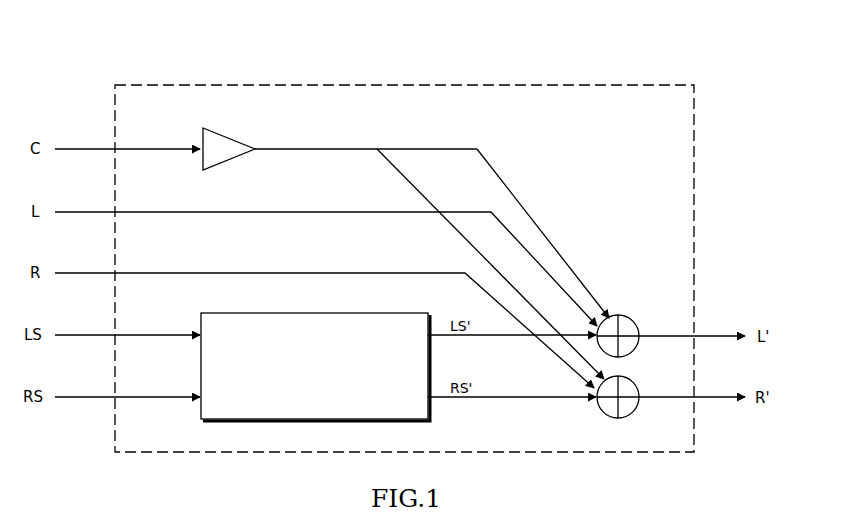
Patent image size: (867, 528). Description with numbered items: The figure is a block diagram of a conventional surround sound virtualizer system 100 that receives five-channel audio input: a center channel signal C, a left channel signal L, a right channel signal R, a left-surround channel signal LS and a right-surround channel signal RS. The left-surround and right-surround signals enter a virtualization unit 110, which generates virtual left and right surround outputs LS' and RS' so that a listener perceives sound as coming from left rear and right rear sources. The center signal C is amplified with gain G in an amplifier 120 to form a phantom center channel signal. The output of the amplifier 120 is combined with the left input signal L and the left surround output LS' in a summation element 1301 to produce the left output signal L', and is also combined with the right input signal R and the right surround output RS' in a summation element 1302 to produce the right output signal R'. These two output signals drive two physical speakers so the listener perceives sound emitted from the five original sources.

The surround sound virtualizer system 100 is at (135, 67).
The virtualization unit 110 is at (248, 313).
The amplifier 120 is at (203, 128).
The summation element 1301 is at (633, 319).
The summation element 1302 is at (634, 381).